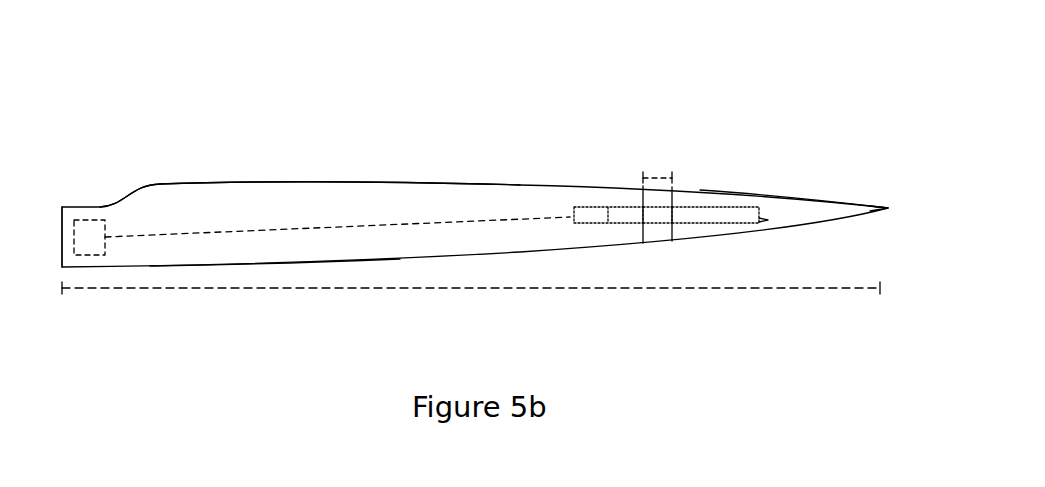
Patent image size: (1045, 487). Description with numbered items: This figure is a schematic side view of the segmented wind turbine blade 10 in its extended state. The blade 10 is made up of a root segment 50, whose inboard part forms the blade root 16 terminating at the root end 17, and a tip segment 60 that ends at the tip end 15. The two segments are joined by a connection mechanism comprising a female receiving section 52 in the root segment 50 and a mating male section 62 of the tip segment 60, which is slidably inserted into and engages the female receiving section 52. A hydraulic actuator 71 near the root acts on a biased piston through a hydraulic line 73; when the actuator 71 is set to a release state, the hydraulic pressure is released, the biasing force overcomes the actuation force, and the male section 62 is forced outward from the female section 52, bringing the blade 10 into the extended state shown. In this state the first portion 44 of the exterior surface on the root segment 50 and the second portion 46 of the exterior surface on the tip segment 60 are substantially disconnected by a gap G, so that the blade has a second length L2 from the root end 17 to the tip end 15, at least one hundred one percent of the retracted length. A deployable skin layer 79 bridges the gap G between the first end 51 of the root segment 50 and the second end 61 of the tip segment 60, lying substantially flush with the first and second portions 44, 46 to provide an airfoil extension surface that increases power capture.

The segmented wind turbine blade 10 is at (240, 134).
The tip end 15 is at (890, 212).
The blade root 16 is at (80, 207).
The root end 17 is at (62, 232).
The first portion of the exterior surface 44 is at (222, 253).
The second portion of the exterior surface 46 is at (768, 220).
The root segment 50 is at (358, 183).
The first end of the root segment 51 is at (645, 202).
The female receiving section 52 is at (593, 207).
The tip segment 60 is at (781, 195).
The second end of the tip segment 61 is at (670, 233).
The male section 62 is at (697, 207).
The hydraulic actuator 71 is at (96, 255).
The hydraulic line 73 is at (320, 231).
The deployable skin layer 79 is at (657, 242).
The gap G is at (657, 170).
The second length L2 is at (318, 291).